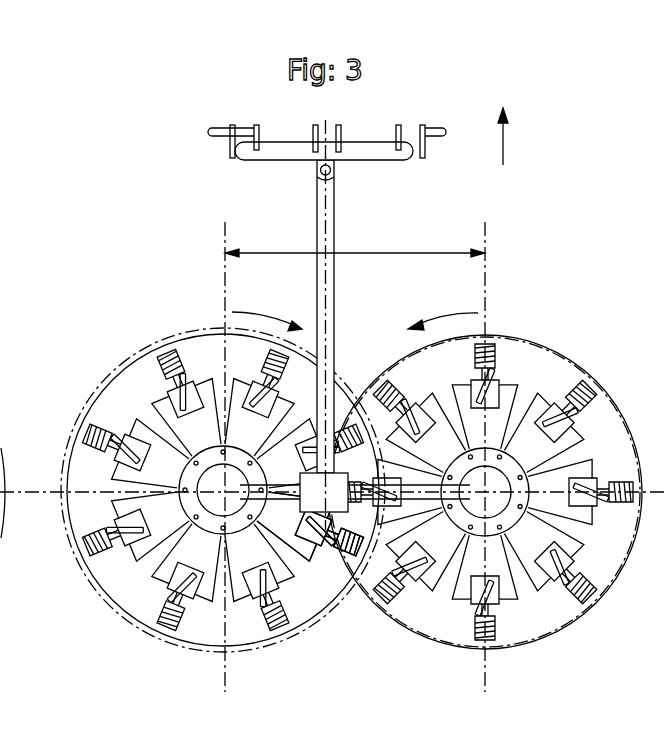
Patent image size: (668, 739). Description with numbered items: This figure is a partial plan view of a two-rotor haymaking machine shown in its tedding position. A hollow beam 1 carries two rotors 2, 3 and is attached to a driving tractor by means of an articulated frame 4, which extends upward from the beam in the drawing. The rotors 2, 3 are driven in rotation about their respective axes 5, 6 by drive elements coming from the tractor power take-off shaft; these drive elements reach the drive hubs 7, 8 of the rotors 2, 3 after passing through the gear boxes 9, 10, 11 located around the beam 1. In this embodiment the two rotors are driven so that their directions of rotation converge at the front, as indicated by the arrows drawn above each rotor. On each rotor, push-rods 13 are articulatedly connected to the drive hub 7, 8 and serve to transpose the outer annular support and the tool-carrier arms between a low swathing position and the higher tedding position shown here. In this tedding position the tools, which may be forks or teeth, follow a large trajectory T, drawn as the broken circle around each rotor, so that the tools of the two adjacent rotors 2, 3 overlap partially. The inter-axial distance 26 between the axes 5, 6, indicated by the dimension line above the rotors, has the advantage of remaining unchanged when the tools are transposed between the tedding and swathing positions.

The hollow beam 1 is at (362, 512).
The rotor 2 is at (180, 307).
The rotor 3 is at (512, 320).
The articulated frame 4 is at (336, 191).
The axis of rotation 5 is at (212, 520).
The axis of rotation 6 is at (530, 540).
The drive hub 7 is at (147, 560).
The drive hub 8 is at (445, 545).
The gear box 9 is at (340, 540).
The gear box 10 is at (237, 520).
The gear box 11 is at (497, 545).
The push-rod 13 is at (132, 368).
The inter-axial distance 26 is at (372, 253).
The trajectory T is at (543, 353).